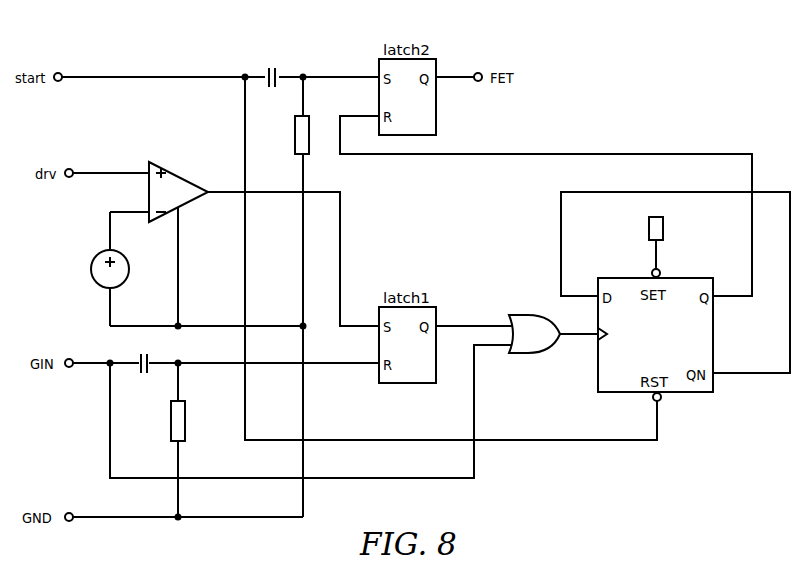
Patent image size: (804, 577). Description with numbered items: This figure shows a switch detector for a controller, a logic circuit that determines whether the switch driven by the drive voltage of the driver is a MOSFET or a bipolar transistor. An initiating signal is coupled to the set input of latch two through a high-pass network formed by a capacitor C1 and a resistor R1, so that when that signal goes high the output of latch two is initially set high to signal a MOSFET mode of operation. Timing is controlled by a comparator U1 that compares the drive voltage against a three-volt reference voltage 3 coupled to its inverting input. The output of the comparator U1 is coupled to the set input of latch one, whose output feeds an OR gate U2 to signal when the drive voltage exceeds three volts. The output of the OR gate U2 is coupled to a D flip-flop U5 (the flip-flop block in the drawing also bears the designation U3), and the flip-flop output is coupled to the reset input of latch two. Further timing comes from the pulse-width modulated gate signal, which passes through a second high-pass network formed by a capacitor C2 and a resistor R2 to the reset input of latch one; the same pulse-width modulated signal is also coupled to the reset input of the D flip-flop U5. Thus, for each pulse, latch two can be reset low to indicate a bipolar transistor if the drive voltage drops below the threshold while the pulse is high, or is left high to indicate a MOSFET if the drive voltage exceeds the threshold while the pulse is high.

The reference voltage Vref 3 is at (92, 269).
The comparator U1 is at (178, 186).
The OR gate U2 is at (534, 347).
The D flip-flop U3 is at (678, 335).
The D flip-flop U5 is at (686, 238).
The resistor R1 is at (288, 135).
The resistor R2 is at (189, 421).
The capacitor C1 is at (270, 66).
The capacitor C2 is at (143, 375).